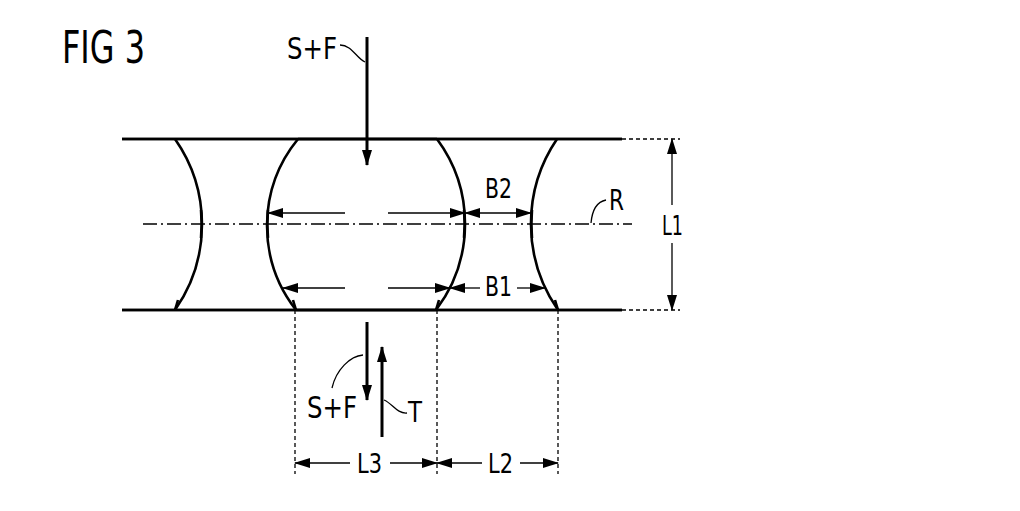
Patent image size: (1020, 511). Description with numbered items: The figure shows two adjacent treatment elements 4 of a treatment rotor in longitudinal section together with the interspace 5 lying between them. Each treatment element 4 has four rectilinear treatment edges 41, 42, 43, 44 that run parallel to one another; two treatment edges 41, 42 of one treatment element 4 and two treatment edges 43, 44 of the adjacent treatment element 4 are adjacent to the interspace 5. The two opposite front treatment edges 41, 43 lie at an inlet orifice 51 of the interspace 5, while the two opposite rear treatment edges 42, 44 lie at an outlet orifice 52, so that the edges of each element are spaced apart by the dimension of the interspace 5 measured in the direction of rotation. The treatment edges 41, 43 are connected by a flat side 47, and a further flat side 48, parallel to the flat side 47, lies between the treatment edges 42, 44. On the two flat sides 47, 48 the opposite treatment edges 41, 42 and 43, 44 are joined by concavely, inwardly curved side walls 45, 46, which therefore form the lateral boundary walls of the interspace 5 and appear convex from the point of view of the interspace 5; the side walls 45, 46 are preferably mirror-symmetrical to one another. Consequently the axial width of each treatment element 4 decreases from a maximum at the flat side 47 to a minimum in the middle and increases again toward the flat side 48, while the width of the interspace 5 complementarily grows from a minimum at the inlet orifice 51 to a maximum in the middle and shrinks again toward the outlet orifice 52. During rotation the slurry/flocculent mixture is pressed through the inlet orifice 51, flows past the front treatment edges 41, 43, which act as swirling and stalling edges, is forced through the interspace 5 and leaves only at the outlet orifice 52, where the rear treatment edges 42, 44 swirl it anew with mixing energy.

The treatment element 4 is at (232, 189).
The interspace 5 is at (398, 177).
The treatment edge 41 is at (175, 139).
The treatment edge 42 is at (175, 311).
The treatment edge 43 is at (298, 139).
The treatment edge 44 is at (295, 311).
The side wall 45 is at (200, 240).
The side wall 46 is at (269, 232).
The flat side 47 is at (233, 139).
The flat side 48 is at (236, 311).
The inlet orifice 51 is at (341, 139).
The outlet orifice 52 is at (357, 312).